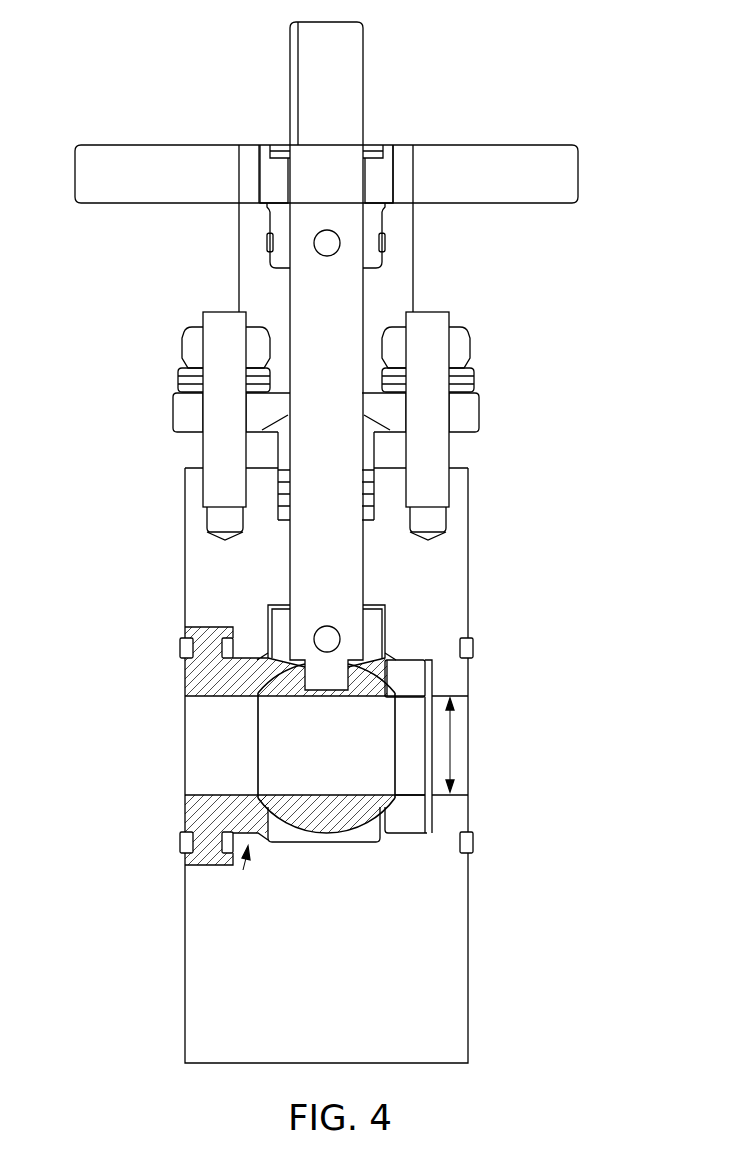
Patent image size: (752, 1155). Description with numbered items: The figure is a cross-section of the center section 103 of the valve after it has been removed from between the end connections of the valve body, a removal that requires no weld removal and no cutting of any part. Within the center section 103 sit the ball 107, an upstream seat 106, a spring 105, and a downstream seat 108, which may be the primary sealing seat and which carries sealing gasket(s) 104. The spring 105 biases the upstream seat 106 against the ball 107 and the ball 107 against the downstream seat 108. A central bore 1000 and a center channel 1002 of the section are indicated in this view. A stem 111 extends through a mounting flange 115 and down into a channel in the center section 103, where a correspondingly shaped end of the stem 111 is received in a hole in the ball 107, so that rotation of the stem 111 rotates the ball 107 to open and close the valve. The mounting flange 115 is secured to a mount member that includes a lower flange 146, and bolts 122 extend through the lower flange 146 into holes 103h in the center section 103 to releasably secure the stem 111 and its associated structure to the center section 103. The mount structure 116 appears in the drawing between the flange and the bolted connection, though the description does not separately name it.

The stem 111 is at (333, 52).
The mounting flange 115 is at (510, 158).
The bonnet yoke 116 is at (402, 255).
The bolts 122 is at (438, 322).
The lower flange 146 is at (465, 412).
The center section 103 is at (460, 478).
The holes 103h is at (197, 492).
The downstream seat 108 is at (208, 635).
The sealing gasket 104 is at (180, 645).
The spring 105 is at (432, 678).
The center channel 1002 is at (452, 748).
The upstream seat 106 is at (418, 808).
The ball 107 is at (326, 812).
The central bore 1000 is at (243, 870).